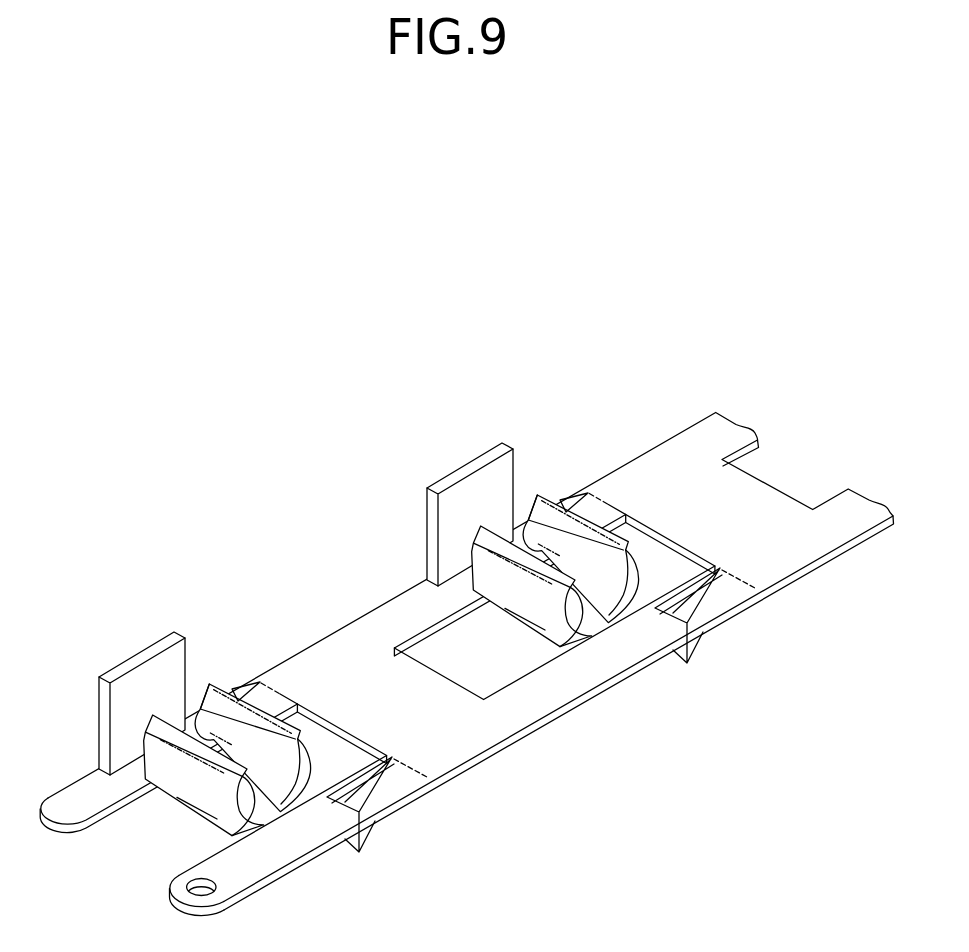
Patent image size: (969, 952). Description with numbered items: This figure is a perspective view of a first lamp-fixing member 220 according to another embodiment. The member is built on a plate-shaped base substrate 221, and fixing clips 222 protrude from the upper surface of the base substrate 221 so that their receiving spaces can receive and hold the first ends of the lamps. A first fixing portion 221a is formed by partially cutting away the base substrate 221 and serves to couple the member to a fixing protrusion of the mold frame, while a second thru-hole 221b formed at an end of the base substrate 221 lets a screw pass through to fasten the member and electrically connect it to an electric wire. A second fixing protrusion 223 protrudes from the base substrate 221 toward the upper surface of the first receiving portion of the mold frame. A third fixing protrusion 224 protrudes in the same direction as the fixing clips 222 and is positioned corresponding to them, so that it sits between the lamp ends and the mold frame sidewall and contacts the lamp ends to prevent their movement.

The first lamp-fixing member 220 is at (398, 334).
The base substrate 221 is at (466, 666).
The first fixing portion 221a is at (490, 645).
The second thru-hole 221b is at (173, 877).
The fixing clips 222 is at (593, 610).
The second fixing protrusion 223 is at (258, 686).
The third fixing protrusion 224 is at (475, 485).